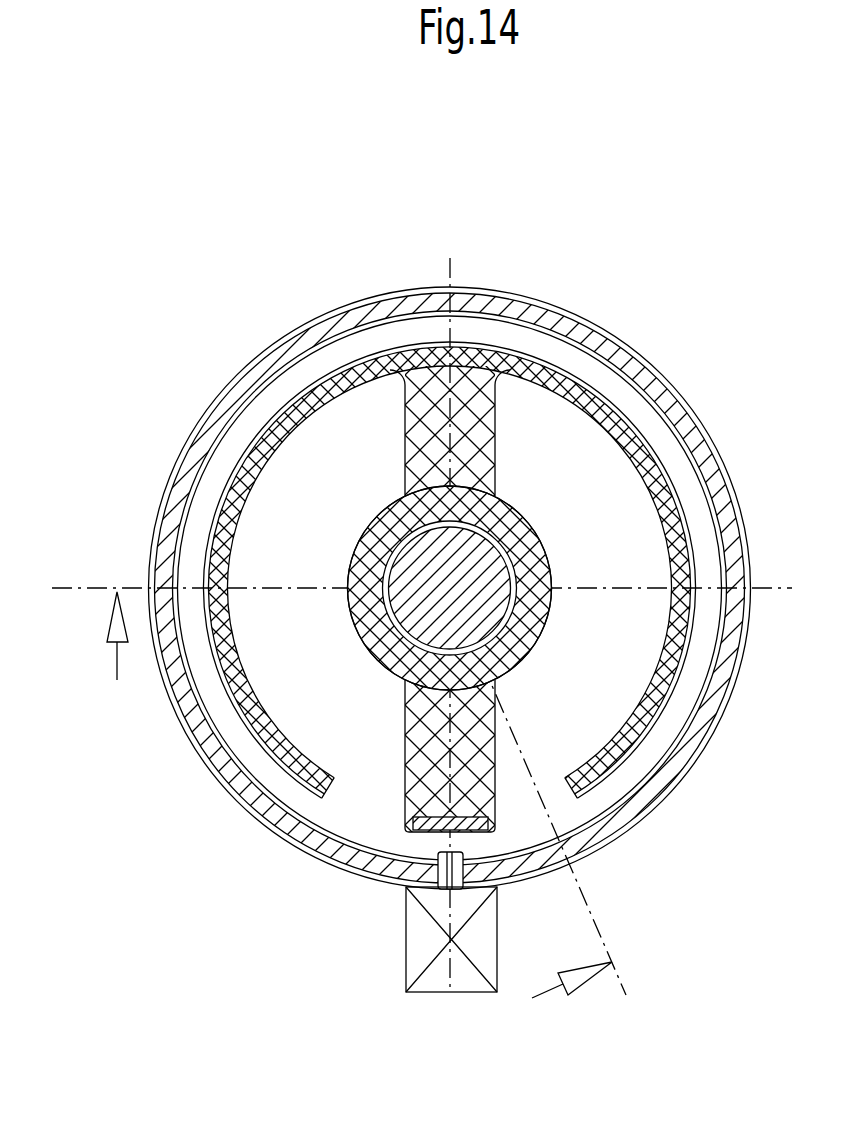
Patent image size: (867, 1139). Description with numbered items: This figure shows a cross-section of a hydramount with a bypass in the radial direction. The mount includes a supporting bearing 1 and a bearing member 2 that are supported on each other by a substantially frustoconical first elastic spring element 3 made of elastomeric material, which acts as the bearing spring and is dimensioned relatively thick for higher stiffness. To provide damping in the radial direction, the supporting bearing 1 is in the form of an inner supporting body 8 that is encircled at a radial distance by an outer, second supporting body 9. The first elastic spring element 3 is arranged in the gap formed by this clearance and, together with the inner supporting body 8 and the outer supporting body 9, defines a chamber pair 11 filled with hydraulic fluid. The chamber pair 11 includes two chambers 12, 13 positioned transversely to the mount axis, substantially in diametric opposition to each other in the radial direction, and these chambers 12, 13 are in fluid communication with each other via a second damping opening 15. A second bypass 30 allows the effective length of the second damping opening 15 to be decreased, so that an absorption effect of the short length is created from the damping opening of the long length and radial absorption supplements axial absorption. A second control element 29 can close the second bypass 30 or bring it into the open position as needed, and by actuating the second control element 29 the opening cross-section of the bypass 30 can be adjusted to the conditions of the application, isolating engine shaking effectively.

The supporting bearing 1 is at (474, 565).
The bearing member 2 is at (732, 655).
The first elastic spring element 3 is at (470, 418).
The inner supporting body 8 is at (479, 606).
The outer supporting body 9 is at (607, 765).
The chamber pair 11 is at (541, 719).
The chamber 12 is at (327, 470).
The chamber 13 is at (626, 559).
The second damping opening 15 is at (558, 353).
The second control element 29 is at (428, 941).
The second bypass 30 is at (442, 843).